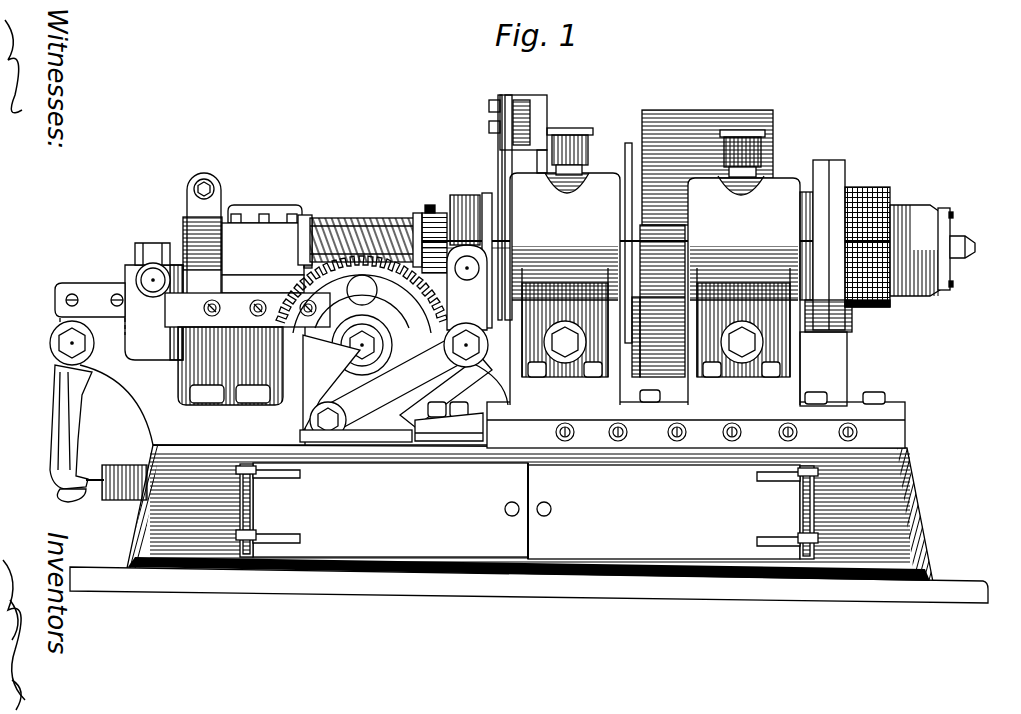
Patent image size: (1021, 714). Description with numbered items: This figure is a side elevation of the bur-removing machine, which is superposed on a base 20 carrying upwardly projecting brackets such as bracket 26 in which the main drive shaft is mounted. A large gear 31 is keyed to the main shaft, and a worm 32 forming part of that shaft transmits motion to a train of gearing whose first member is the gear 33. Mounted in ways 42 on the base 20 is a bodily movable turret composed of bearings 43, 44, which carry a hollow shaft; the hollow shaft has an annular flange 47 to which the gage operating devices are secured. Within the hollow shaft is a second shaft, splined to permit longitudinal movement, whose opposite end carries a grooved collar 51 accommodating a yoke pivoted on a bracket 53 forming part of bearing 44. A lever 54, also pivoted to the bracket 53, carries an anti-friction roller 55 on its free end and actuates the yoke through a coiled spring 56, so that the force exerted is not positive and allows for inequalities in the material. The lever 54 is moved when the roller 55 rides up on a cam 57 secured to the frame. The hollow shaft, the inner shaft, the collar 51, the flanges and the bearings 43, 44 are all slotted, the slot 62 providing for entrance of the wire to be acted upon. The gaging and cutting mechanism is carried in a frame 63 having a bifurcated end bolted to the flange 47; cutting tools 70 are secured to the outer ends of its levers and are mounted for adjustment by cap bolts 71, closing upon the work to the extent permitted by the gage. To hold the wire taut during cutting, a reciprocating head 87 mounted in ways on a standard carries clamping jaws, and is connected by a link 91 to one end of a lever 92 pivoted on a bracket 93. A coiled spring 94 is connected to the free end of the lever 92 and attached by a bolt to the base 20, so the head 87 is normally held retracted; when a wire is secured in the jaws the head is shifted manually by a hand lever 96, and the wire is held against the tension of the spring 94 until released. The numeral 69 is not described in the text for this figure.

The base 20 is at (905, 470).
The upwardly projecting bracket 26 is at (331, 383).
The large gear 31 is at (690, 122).
The worm 32 is at (368, 223).
The gear 33 is at (361, 315).
The ways 42 is at (900, 408).
The bearing 43 is at (766, 231).
The bearing 44 is at (586, 229).
The annular flange 47 is at (828, 165).
The grooved collar 51 is at (468, 213).
The bracket 53 is at (483, 367).
The lever 54 is at (394, 385).
The anti-friction roller 55 is at (350, 440).
The coiled spring 56 is at (432, 353).
The cam 57 is at (448, 418).
The slot 62 is at (426, 243).
The frame 63 is at (858, 185).
The pedestal plate 69 is at (247, 369).
The cutting tools 70 is at (972, 252).
The cap bolts 71 is at (955, 214).
The reciprocating head 87 is at (247, 236).
The link 91 is at (97, 290).
The lever 92 is at (58, 318).
The bracket 93 is at (118, 373).
The coiled spring 94 is at (118, 498).
The hand lever 96 is at (152, 265).